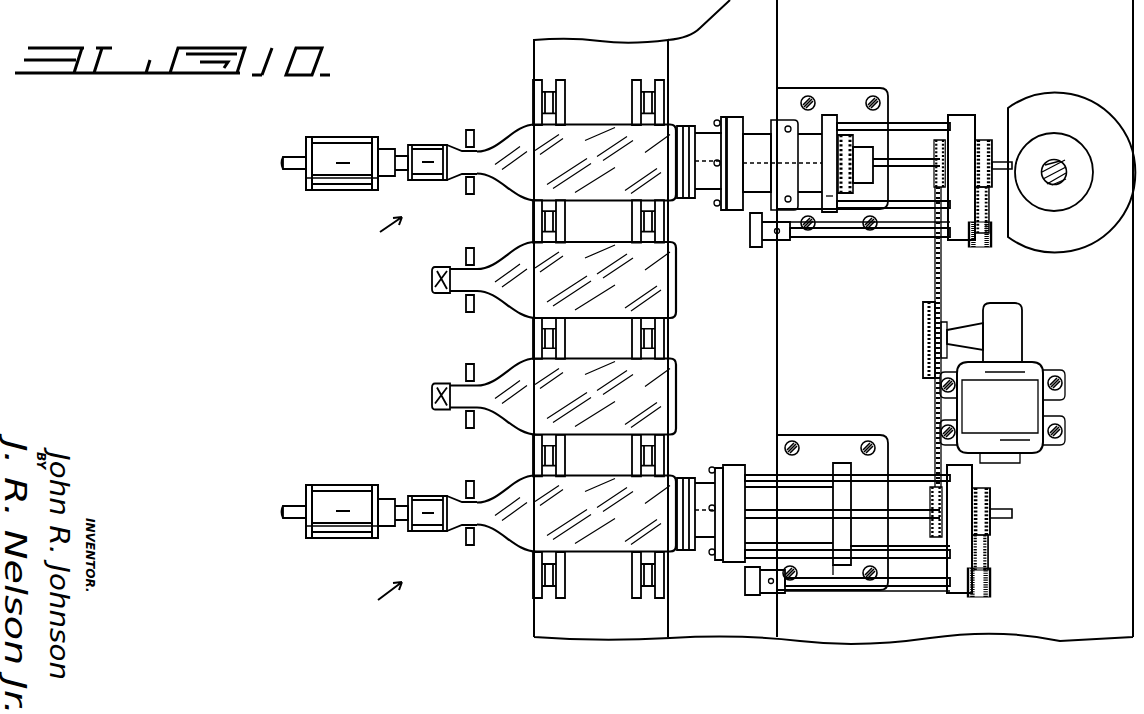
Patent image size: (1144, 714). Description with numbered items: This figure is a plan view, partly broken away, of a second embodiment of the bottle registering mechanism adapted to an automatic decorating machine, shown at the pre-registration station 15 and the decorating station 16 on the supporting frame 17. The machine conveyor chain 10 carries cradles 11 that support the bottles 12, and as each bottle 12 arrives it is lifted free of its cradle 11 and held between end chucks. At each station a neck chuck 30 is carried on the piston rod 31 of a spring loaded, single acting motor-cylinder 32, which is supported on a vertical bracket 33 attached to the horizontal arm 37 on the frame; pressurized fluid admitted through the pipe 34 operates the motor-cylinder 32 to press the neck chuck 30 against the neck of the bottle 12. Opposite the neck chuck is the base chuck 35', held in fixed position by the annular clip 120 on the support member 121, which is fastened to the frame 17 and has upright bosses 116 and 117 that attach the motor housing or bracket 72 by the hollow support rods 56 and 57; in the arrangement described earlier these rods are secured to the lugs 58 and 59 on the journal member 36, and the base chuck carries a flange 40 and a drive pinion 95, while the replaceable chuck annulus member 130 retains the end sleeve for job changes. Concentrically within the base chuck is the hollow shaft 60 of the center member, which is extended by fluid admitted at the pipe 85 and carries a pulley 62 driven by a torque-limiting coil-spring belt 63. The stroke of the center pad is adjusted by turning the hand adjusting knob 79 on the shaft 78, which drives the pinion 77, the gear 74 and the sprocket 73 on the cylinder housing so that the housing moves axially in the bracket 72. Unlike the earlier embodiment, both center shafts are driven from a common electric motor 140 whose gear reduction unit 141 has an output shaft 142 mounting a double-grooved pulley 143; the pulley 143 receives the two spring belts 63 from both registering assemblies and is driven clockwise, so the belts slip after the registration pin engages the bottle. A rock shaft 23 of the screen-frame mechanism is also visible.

The machine conveyor chain 10 is at (536, 96).
The cradle 11 is at (468, 192).
The bottle 12 is at (524, 262).
The pre-registration station 15 is at (376, 615).
The decorating station 16 is at (376, 246).
The supporting frame 17 is at (820, 333).
The rock shaft 23 is at (1056, 170).
The neck chuck 30 is at (428, 150).
The piston rod 31 is at (395, 152).
The motor-cylinder 32 is at (334, 140).
The vertical bracket 33 is at (342, 188).
The pipe 34 is at (294, 162).
The base chuck 35' is at (704, 372).
The journal member 36 is at (756, 134).
The horizontal arm 37 is at (516, 104).
The flange 40 is at (735, 210).
The hollow support rod 56 is at (905, 123).
The hollow support rod 57 is at (900, 210).
The lug 58 is at (830, 115).
The lug 59 is at (829, 214).
The hollow shaft 60 is at (900, 166).
The pulley 62 is at (934, 148).
The coil-spring belt 63 is at (934, 274).
The bracket 72 is at (962, 115).
The sprocket 73 is at (988, 140).
The gear 74 is at (991, 212).
The drive pinion 77 is at (992, 246).
The shaft 78 is at (808, 237).
The hand adjusting knob 79 is at (756, 247).
The pipe 85 is at (1006, 163).
The drive pinion 95 is at (848, 137).
The upright boss 116 is at (842, 463).
The upright boss 117 is at (843, 566).
The annular clip 120 is at (723, 117).
The support member 121 is at (742, 465).
The chuck annulus member 130 is at (684, 126).
The electric motor 140 is at (1022, 407).
The gear reduction unit 141 is at (1005, 323).
The output shaft 142 is at (960, 332).
The double-grooved pulley 143 is at (922, 335).